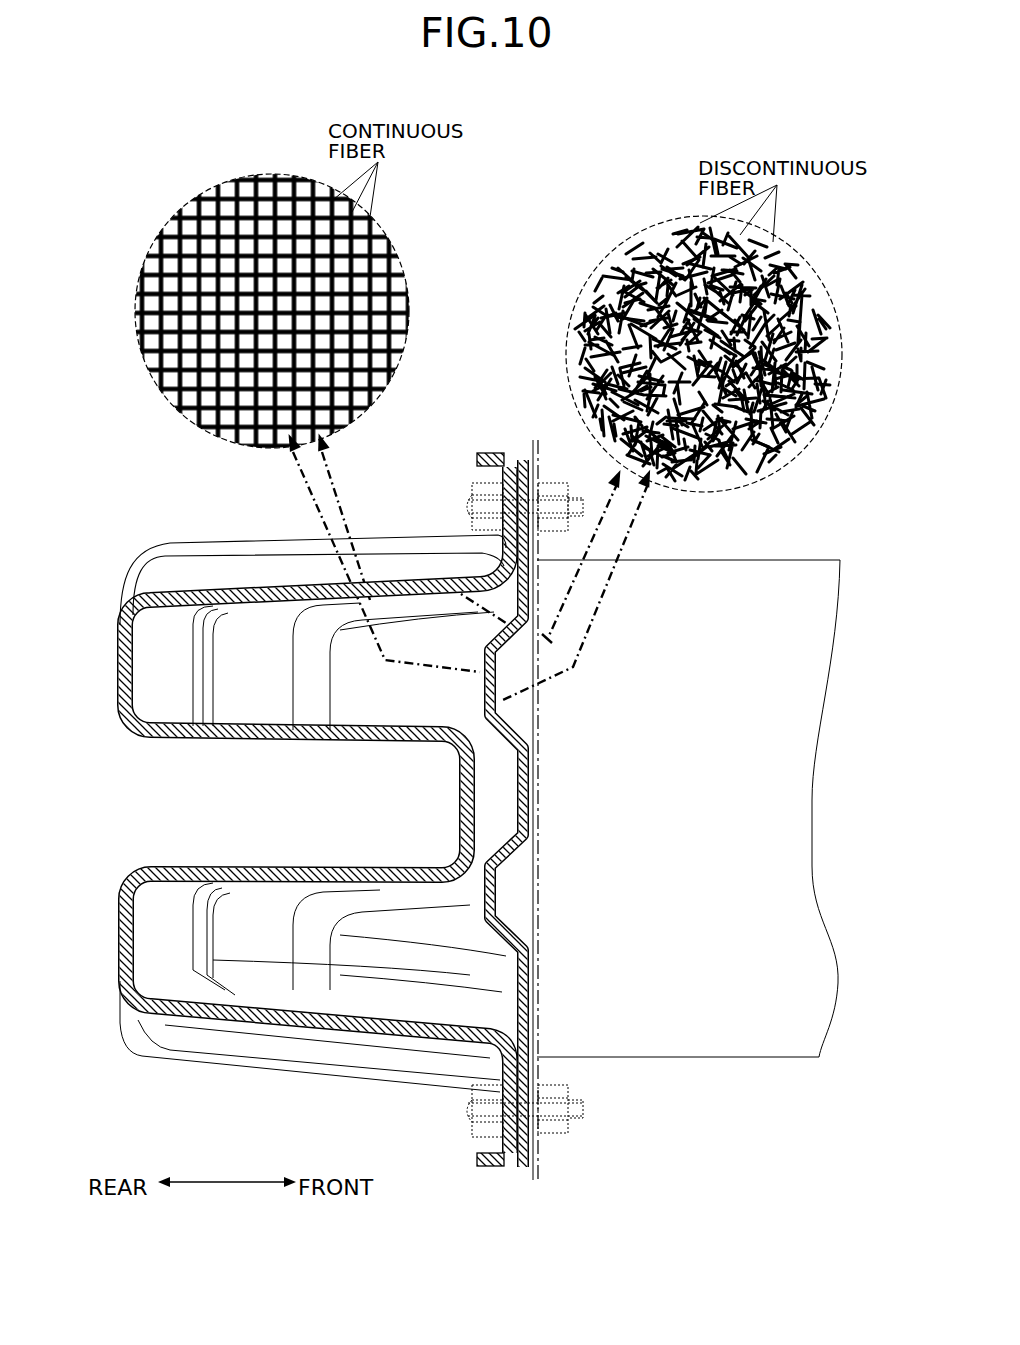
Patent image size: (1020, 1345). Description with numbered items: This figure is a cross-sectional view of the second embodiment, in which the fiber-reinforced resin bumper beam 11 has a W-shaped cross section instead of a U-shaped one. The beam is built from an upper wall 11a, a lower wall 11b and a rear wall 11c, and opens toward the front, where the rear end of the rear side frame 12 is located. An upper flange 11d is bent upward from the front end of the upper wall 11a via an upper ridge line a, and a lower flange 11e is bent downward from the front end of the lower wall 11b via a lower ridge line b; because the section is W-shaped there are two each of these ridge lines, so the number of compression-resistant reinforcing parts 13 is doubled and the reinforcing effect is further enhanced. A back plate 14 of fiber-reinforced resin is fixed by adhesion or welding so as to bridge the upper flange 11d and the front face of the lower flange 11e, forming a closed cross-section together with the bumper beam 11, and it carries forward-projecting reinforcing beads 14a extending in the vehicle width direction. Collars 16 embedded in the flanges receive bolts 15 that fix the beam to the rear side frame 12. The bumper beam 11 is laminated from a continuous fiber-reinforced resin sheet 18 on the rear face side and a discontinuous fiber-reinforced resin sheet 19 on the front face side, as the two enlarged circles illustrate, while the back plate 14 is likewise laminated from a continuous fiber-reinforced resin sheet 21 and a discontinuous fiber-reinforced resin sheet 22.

The bumper beam 11 is at (146, 524).
The upper wall 11a is at (242, 590).
The lower wall 11b is at (215, 740).
The rear wall 11c is at (118, 660).
The upper flange 11d is at (500, 548).
The lower flange 11e is at (500, 1072).
The rear side frame 12 is at (740, 1058).
The compression-resistant reinforcing part 13 is at (530, 603).
The back plate 14 is at (538, 782).
The reinforcing bead 14a is at (484, 698).
The bolt 15 is at (470, 500).
The collar 16 is at (516, 456).
The continuous fiber-reinforced resin sheet 18 is at (252, 742).
The discontinuous fiber-reinforced resin sheet 19 is at (275, 722).
The continuous fiber-reinforced resin sheet 21 is at (462, 779).
The discontinuous fiber-reinforced resin sheet 22 is at (520, 818).